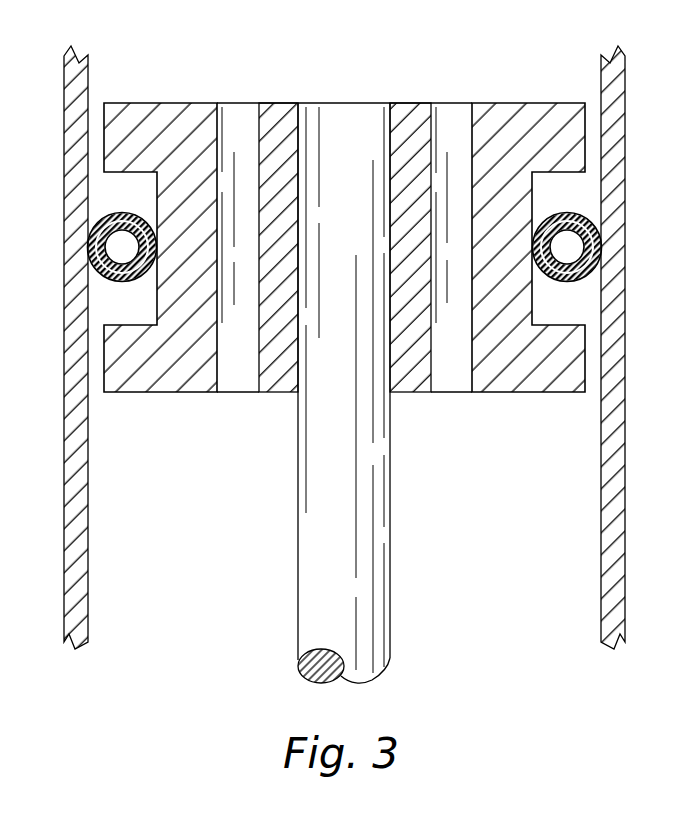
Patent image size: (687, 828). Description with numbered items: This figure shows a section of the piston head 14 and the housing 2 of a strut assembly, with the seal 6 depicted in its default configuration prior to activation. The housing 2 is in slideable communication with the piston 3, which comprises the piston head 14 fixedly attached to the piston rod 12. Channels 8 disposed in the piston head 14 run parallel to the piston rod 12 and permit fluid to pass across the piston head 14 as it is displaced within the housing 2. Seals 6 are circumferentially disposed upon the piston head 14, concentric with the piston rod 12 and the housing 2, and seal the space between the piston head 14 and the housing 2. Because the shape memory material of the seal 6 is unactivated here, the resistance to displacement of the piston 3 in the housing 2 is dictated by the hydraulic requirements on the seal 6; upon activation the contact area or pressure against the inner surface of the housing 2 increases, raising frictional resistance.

The housing 2 is at (626, 565).
The piston 3 is at (344, 357).
The seal 6 is at (125, 283).
The channel 8 is at (455, 123).
The piston rod 12 is at (375, 573).
The piston head 14 is at (176, 103).